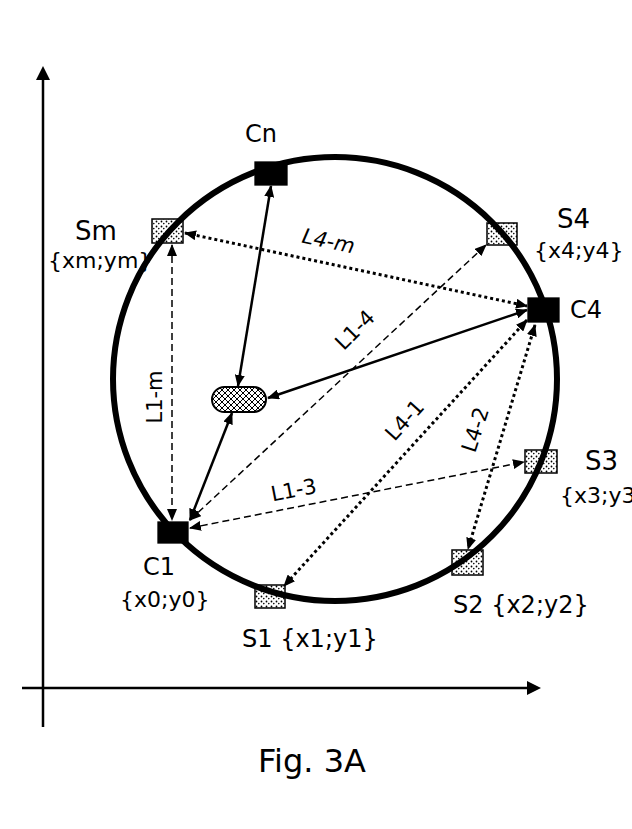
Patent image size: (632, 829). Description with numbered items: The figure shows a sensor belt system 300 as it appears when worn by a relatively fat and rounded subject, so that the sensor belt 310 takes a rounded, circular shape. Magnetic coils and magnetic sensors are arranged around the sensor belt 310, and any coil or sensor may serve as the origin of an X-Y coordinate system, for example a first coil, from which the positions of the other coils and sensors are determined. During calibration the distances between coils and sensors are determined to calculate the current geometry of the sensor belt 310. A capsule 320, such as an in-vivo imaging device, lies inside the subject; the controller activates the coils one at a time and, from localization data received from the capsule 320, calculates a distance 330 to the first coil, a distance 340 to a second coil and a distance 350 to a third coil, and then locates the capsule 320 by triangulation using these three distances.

The sensor belt system 300 is at (197, 125).
The sensor belt 310 is at (372, 158).
The capsule 320 is at (262, 391).
The distance between coil C1 and capsule 330 is at (204, 483).
The distance between coil C4 and capsule 340 is at (428, 344).
The distance between coil Cn and capsule 350 is at (250, 315).